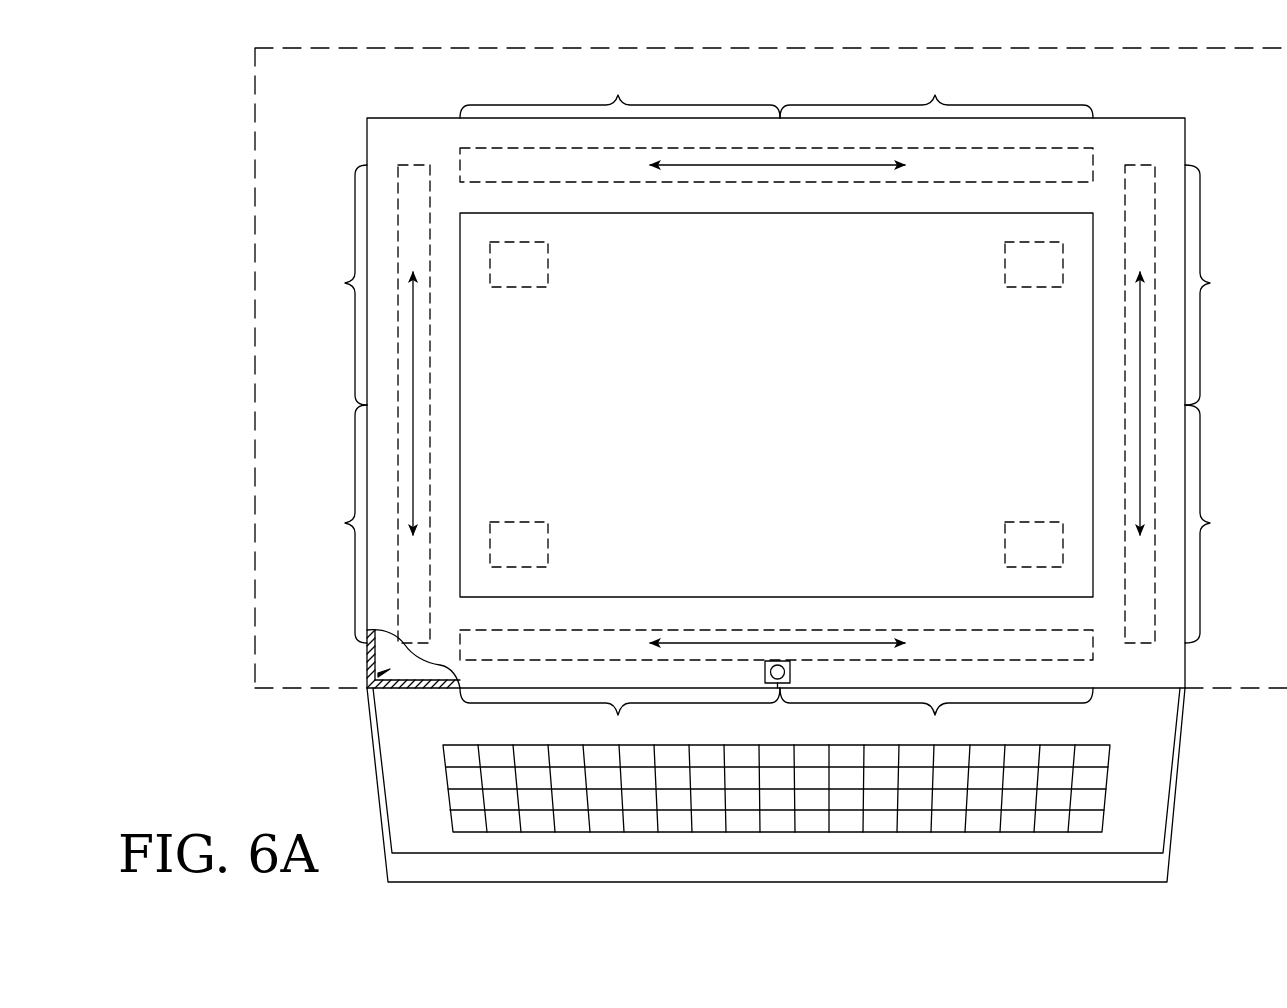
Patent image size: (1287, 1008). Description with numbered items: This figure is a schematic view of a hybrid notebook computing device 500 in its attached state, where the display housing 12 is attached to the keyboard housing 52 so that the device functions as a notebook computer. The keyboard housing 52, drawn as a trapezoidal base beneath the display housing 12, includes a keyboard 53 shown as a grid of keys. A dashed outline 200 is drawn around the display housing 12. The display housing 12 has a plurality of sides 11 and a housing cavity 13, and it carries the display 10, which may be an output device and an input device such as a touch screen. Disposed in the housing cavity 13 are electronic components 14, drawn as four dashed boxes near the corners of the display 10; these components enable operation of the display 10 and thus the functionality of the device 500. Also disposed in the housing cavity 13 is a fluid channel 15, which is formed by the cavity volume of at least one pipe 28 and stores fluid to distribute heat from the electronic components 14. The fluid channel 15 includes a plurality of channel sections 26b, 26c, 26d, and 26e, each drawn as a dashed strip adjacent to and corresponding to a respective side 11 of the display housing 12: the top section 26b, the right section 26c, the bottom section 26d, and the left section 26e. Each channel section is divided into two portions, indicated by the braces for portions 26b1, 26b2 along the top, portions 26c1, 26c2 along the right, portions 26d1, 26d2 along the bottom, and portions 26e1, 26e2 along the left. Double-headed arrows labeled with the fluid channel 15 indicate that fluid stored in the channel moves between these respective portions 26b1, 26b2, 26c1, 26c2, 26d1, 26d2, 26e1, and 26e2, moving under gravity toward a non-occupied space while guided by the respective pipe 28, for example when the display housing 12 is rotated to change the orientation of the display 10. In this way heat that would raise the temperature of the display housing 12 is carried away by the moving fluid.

The hybrid notebook computing device 500 is at (185, 125).
The display device 200 is at (255, 222).
The display housing 12 is at (365, 117).
The display 10 is at (459, 211).
The side 11 is at (1166, 116).
The housing cavity 13 is at (366, 689).
The electronic components 14 is at (549, 272).
The fluid channel 15 is at (765, 167).
The pipe 28 is at (413, 160).
The channel section 26b is at (1098, 166).
The portion of channel section 26b1 is at (620, 93).
The portion of channel section 26b2 is at (936, 93).
The channel section 26c is at (1155, 646).
The portion of channel section 26c1 is at (1226, 285).
The portion of channel section 26c2 is at (1226, 524).
The channel section 26d is at (437, 668).
The portion of channel section 26d1 is at (620, 717).
The portion of channel section 26d2 is at (936, 717).
The channel section 26e is at (398, 163).
The portion of channel section 26e1 is at (325, 285).
The portion of channel section 26e2 is at (325, 524).
The keyboard housing 52 is at (1155, 835).
The keyboard 53 is at (1106, 796).